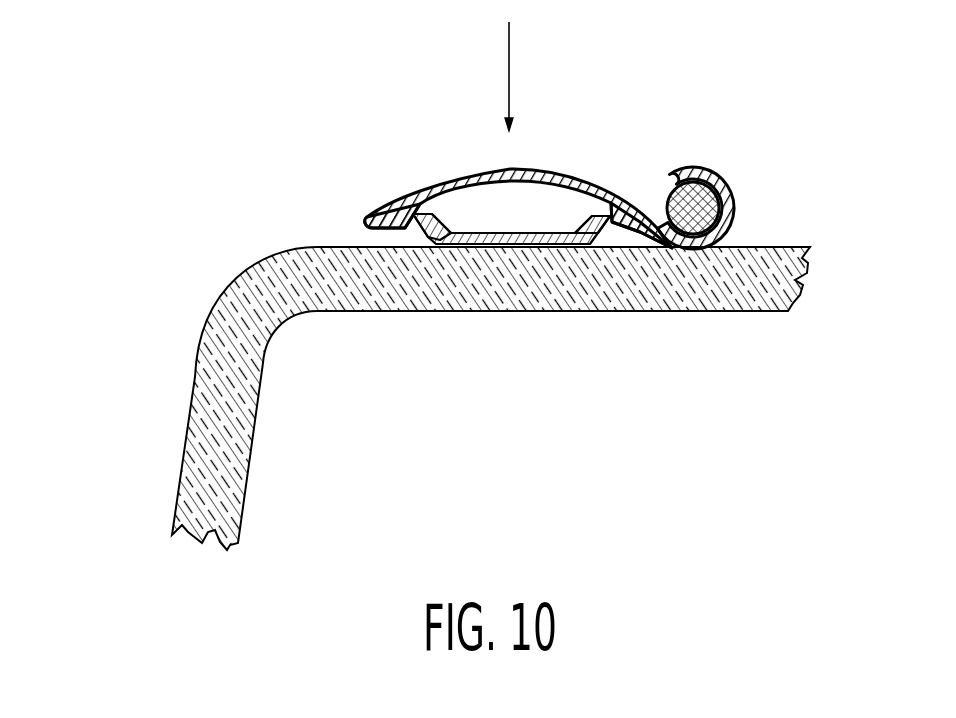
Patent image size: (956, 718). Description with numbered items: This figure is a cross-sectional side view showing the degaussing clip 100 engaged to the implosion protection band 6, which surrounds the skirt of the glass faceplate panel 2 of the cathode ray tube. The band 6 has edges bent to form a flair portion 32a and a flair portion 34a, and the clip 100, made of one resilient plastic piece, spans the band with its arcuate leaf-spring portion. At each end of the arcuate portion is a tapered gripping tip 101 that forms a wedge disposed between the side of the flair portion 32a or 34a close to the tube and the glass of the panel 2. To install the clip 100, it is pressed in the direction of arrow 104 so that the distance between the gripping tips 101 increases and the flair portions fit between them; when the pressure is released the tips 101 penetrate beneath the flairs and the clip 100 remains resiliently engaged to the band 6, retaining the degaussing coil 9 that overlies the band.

The faceplate panel 2 is at (186, 442).
The implosion protection band 6 is at (504, 170).
The degaussing coil 9 is at (720, 175).
The flair portion 32a is at (414, 212).
The flair portion 34a is at (585, 217).
The degaussing clip 100 is at (540, 172).
The gripping tip 101 is at (366, 214).
The arrow 104 is at (509, 47).